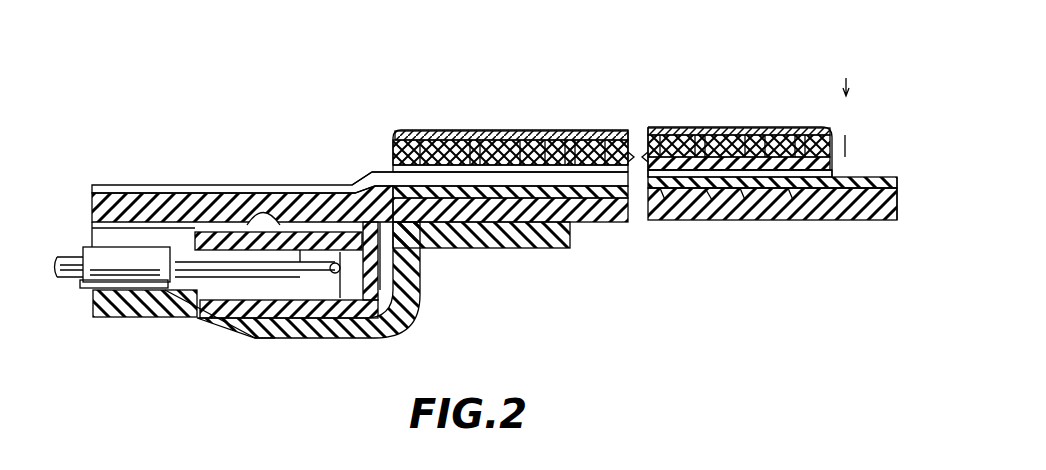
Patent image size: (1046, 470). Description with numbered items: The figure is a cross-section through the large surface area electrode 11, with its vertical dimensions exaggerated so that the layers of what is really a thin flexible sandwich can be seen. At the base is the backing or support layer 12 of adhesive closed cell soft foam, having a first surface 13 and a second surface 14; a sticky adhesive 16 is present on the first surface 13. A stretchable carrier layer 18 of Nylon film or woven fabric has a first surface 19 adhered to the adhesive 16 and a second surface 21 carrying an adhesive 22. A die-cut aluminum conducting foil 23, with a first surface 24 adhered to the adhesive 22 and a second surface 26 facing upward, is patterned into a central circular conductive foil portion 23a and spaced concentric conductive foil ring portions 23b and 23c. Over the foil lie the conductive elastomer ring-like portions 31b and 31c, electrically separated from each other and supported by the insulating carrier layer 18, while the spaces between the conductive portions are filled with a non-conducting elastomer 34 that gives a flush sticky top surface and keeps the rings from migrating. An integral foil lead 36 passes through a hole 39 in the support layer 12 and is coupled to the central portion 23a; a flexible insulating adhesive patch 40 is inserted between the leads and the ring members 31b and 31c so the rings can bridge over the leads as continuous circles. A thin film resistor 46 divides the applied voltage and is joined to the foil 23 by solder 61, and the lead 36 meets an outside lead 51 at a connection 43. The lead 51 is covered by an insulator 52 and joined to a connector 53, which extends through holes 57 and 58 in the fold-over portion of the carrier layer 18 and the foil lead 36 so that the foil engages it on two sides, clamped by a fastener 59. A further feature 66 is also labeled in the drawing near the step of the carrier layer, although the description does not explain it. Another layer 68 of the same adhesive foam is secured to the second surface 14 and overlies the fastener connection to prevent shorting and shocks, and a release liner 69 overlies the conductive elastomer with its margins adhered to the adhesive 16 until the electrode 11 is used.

The large surface area electrode 11 is at (846, 80).
The backing or support layer 12 is at (878, 210).
The first surface 13 is at (897, 185).
The second surface 14 is at (838, 210).
The adhesive 16 is at (880, 177).
The carrier layer 18 is at (198, 183).
The first surface 19 is at (710, 210).
The second surface 21 is at (657, 130).
The adhesive 22 is at (743, 128).
The conducting foil 23 is at (613, 130).
The central circular conductive foil portion 23a is at (660, 217).
The conductive foil ring portion 23b is at (743, 210).
The conductive foil ring portion 23c is at (790, 210).
The first surface 24 is at (533, 130).
The second surface 26 is at (548, 130).
The conductive elastomer ring-like portion 31b is at (760, 128).
The conductive elastomer ring-like portion 31c is at (412, 140).
The non-conducting elastomer 34 is at (490, 130).
The lead 36 is at (317, 333).
The hole 39 is at (358, 182).
The adhesive patch 40 is at (445, 130).
The connection 43 is at (263, 338).
The thin film resistor 46 is at (340, 184).
The lead 51 is at (122, 288).
The insulator 52 is at (135, 317).
The connector 53 is at (197, 316).
The hole 57 is at (180, 232).
The hole 58 is at (200, 258).
The fastener 59 is at (263, 222).
The solder 61 is at (380, 333).
The step 66 is at (375, 171).
The layer of adhesive foam 68 is at (150, 183).
The release liner 69 is at (100, 183).